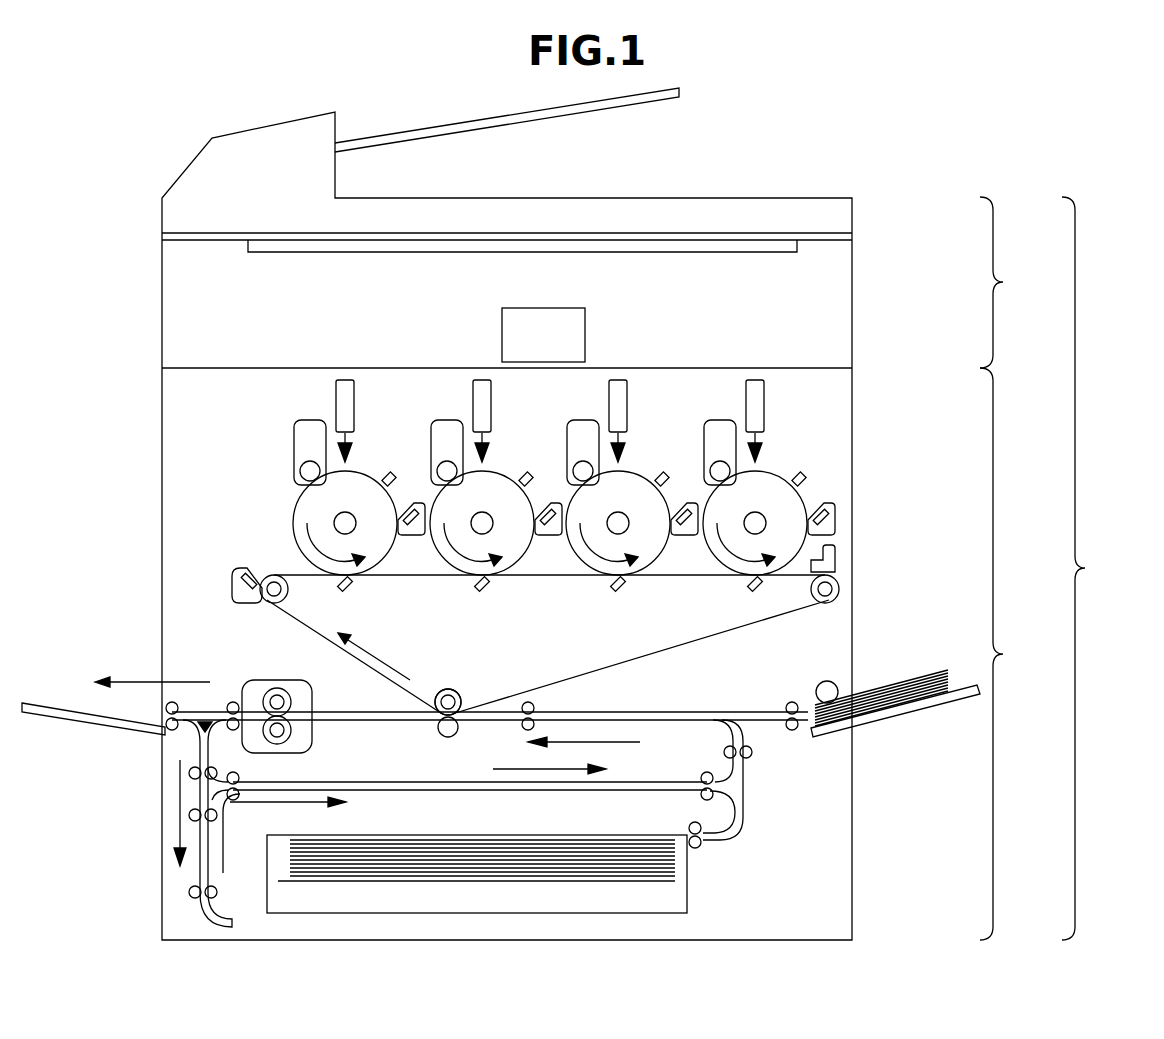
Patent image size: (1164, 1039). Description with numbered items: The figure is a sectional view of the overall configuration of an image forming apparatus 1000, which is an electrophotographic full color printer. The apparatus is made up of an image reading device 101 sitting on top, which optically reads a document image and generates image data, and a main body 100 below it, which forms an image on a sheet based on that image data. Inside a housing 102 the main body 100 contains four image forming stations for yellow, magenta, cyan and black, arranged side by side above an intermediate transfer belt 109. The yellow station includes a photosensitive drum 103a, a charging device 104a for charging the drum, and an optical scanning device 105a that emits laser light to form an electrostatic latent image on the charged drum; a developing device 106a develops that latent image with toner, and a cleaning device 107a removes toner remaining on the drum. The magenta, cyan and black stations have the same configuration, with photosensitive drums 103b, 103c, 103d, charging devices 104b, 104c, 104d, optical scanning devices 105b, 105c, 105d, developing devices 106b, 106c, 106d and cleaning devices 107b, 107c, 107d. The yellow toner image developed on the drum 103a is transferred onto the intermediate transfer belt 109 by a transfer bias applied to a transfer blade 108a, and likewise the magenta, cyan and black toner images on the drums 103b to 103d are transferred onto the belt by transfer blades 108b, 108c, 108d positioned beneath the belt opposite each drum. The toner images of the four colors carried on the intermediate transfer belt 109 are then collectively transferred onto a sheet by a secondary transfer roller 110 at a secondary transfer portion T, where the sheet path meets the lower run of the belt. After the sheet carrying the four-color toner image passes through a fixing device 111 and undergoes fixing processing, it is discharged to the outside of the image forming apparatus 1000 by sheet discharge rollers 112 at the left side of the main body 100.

The image forming apparatus 1000 is at (657, 526).
The image reading device 101 is at (609, 228).
The main body 100 is at (609, 654).
The housing 102 is at (855, 645).
The photosensitive drum 103a is at (356, 478).
The photosensitive drum 103b is at (490, 486).
The photosensitive drum 103c is at (626, 482).
The photosensitive drum 103d is at (764, 482).
The charging device 104a is at (390, 474).
The charging device 104b is at (528, 475).
The charging device 104c is at (664, 475).
The charging device 104d is at (805, 476).
The optical scanning device 105a is at (340, 378).
The optical scanning device 105b is at (480, 378).
The optical scanning device 105c is at (617, 378).
The optical scanning device 105d is at (754, 378).
The developing device 106a is at (300, 438).
The developing device 106b is at (440, 437).
The developing device 106c is at (578, 438).
The developing device 106d is at (716, 438).
The cleaning device 107a is at (413, 537).
The cleaning device 107b is at (553, 537).
The cleaning device 107c is at (688, 537).
The cleaning device 107d is at (836, 522).
The transfer blade 108a is at (345, 588).
The transfer blade 108b is at (484, 589).
The transfer blade 108c is at (618, 590).
The transfer blade 108d is at (756, 590).
The intermediate transfer belt 109 is at (580, 680).
The secondary transfer roller 110 is at (437, 732).
The fixing device 111 is at (286, 700).
The sheet discharge rollers 112 is at (232, 700).
The secondary transfer portion T is at (462, 700).